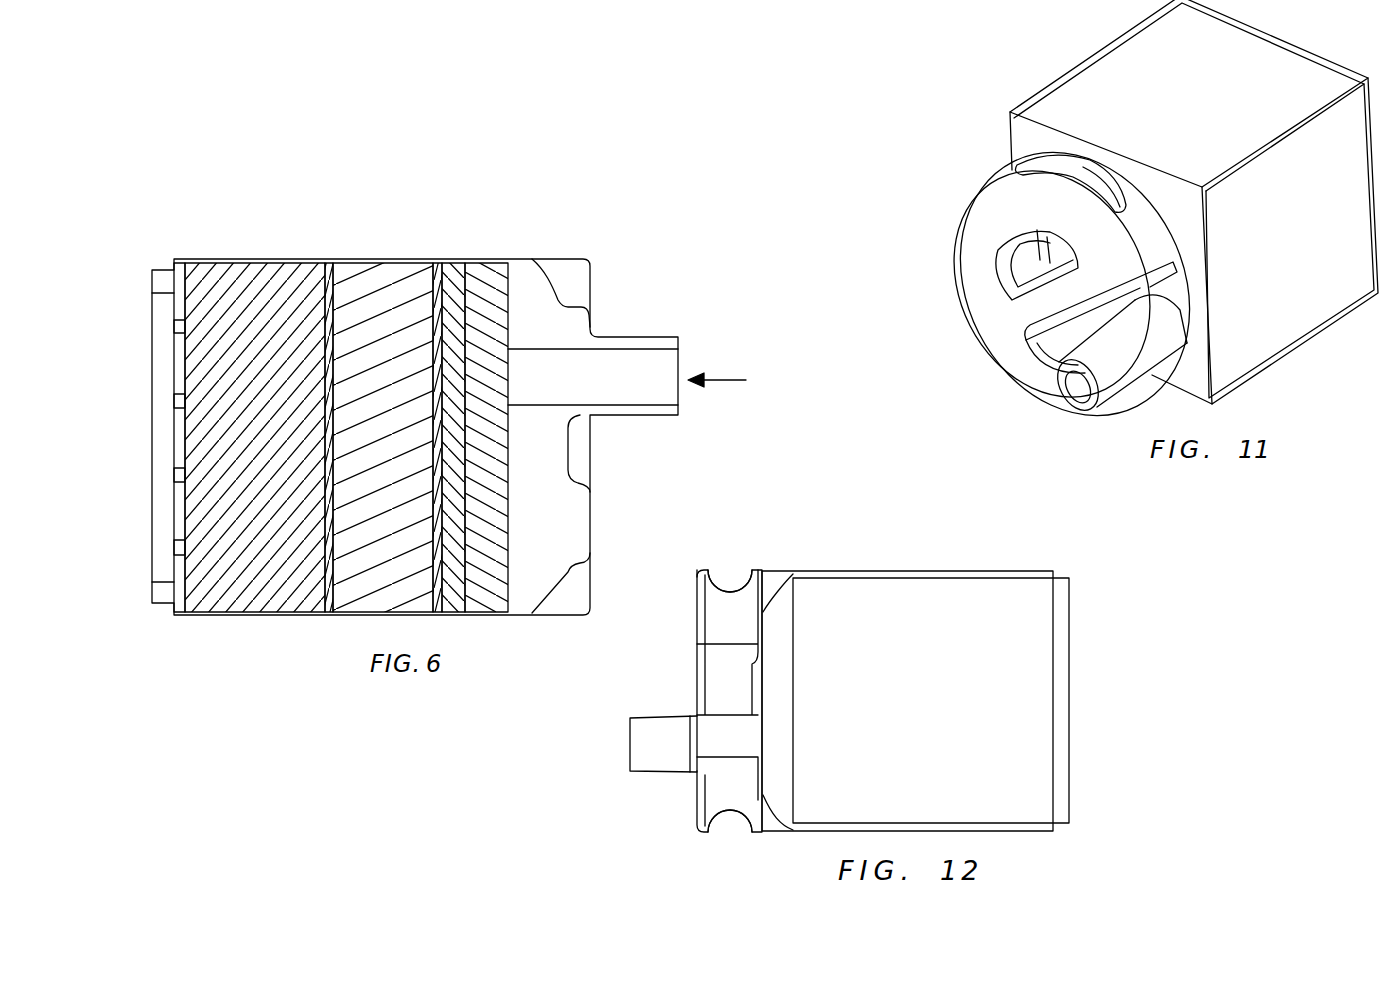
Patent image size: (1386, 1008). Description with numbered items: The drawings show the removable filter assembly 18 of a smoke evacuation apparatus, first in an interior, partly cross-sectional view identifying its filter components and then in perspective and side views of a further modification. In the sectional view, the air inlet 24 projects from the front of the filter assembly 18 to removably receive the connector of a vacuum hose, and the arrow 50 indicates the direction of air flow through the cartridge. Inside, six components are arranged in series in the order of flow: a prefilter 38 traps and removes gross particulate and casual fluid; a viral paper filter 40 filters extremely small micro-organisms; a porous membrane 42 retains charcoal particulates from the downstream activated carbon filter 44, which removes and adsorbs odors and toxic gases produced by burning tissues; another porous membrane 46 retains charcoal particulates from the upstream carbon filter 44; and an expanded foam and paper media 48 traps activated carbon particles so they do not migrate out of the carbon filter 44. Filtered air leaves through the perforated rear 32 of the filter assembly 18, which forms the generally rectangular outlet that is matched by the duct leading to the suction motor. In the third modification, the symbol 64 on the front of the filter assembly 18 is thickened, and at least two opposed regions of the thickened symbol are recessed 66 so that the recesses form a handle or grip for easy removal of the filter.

In FIG. 6, the filter assembly 18 is at (548, 259).
In FIG. 11, the filter assembly 18 is at (1306, 304).
In FIG. 12, the filter assembly 18 is at (952, 713).
In FIG. 6, the air inlet 24 is at (634, 344).
In FIG. 6, the perforated rear 32 is at (178, 306).
In FIG. 6, the prefilter 38 is at (480, 270).
In FIG. 6, the viral paper filter 40 is at (452, 266).
In FIG. 6, the porous membrane 42 is at (437, 270).
In FIG. 6, the activated carbon filter 44 is at (372, 276).
In FIG. 6, the porous membrane 46 is at (328, 270).
In FIG. 6, the expanded foam and paper media 48 is at (255, 270).
In FIG. 6, the arrow 50 is at (720, 376).
In FIG. 11, the symbol 64 is at (1012, 358).
In FIG. 12, the symbol 64 is at (715, 619).
In FIG. 11, the recessed regions 66 is at (1050, 173).
In FIG. 12, the recessed regions 66 is at (740, 585).